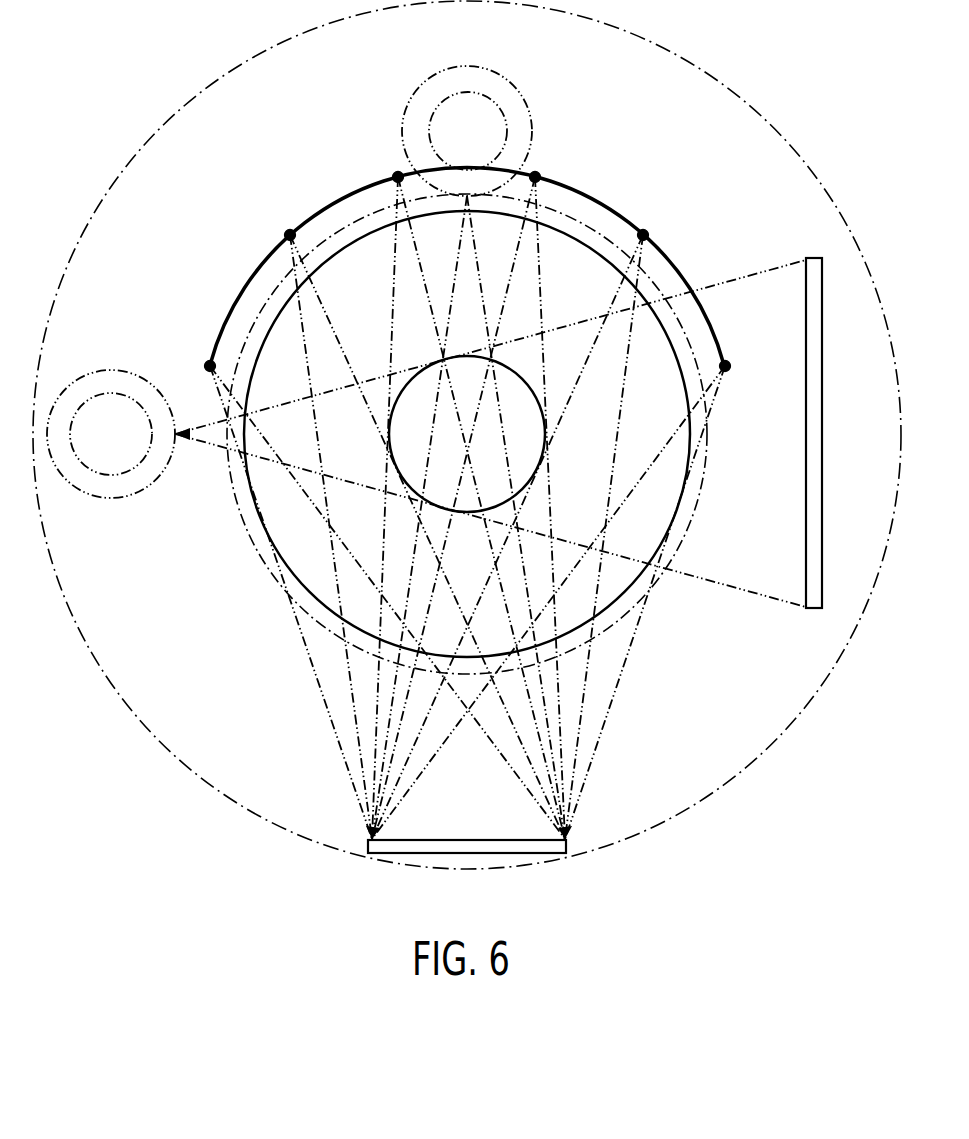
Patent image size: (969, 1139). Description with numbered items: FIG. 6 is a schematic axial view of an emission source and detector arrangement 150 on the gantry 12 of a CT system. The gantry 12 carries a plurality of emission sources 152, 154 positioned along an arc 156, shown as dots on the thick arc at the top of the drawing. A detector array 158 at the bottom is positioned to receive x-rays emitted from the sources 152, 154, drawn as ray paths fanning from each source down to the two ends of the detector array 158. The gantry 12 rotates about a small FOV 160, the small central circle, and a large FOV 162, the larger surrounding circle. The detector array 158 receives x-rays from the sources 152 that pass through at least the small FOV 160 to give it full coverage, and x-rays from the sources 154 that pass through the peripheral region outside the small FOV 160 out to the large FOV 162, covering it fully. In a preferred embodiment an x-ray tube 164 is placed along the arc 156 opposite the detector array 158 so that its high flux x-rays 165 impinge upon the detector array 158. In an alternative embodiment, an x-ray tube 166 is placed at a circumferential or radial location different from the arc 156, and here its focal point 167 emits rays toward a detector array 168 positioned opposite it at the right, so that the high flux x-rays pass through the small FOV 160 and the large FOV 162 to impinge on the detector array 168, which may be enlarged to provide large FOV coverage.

The imaging system 150 is at (106, 136).
The gantry 12 is at (707, 798).
The emission sources 152 is at (398, 177).
The emission sources 154 is at (290, 235).
The arc 156 is at (593, 197).
The detector array 158 is at (568, 847).
The small FOV 160 is at (408, 383).
The large FOV 162 is at (625, 593).
The x-ray tube 164 is at (408, 112).
The high flux x-rays 165 is at (467, 197).
The x-ray tube 166 is at (117, 370).
The focal spot 167 is at (177, 437).
The detector array 168 is at (806, 528).